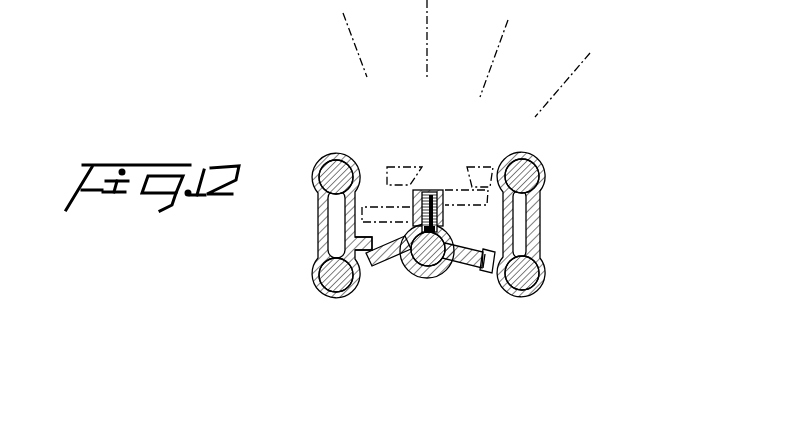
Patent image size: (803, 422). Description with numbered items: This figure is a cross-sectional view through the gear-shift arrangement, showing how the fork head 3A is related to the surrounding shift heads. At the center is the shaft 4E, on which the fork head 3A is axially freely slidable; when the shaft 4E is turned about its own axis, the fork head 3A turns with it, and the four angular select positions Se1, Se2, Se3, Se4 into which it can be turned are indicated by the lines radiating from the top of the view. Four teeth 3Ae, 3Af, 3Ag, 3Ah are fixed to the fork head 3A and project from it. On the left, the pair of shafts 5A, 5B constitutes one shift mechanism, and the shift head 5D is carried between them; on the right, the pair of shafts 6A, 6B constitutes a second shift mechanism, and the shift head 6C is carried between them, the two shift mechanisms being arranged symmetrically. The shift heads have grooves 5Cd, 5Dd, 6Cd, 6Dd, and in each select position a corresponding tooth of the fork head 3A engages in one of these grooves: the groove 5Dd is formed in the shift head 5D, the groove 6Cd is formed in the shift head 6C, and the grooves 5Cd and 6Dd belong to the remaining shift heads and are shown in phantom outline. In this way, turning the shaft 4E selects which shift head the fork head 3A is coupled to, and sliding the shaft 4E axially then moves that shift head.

The select position Se1 is at (572, 70).
The select position Se2 is at (503, 35).
The select position Se3 is at (427, 20).
The select position Se4 is at (352, 28).
The shaft 5A is at (325, 172).
The shaft 5B is at (334, 287).
The shift head 5D is at (316, 228).
The groove 5Dd is at (371, 242).
The groove 5Cd is at (400, 170).
The fork head 3A is at (422, 284).
The tooth 3Ae is at (380, 213).
The tooth 3Af is at (373, 272).
The tooth 3Ag is at (470, 268).
The tooth 3Ah is at (477, 197).
The shaft 4E is at (413, 273).
The shaft 6A is at (540, 276).
The shaft 6B is at (538, 172).
The shift head 6C is at (544, 223).
The groove 6Cd is at (485, 278).
The groove 6Dd is at (479, 165).